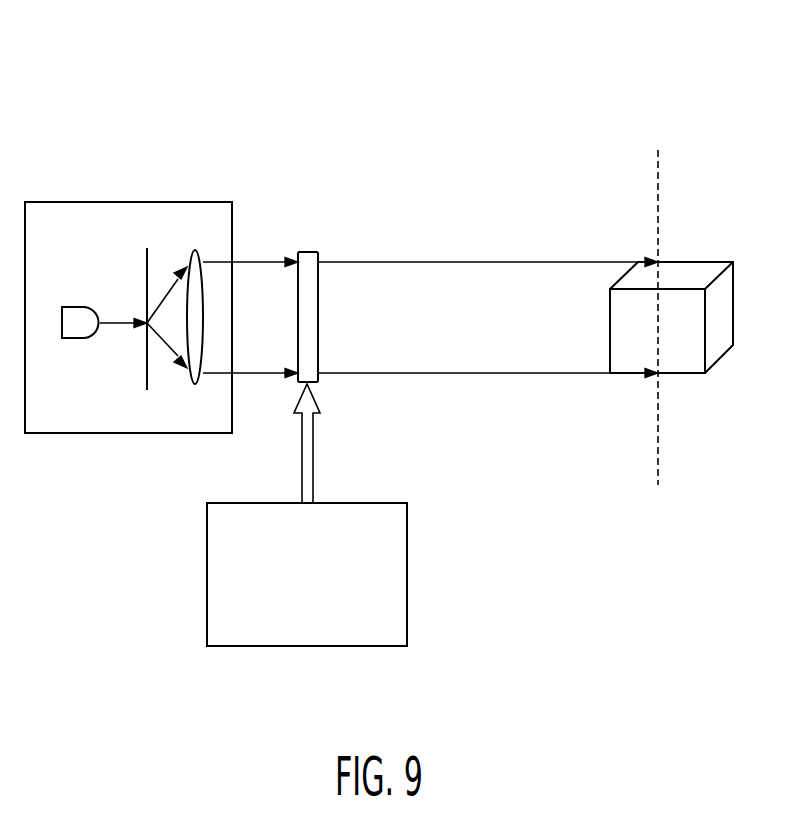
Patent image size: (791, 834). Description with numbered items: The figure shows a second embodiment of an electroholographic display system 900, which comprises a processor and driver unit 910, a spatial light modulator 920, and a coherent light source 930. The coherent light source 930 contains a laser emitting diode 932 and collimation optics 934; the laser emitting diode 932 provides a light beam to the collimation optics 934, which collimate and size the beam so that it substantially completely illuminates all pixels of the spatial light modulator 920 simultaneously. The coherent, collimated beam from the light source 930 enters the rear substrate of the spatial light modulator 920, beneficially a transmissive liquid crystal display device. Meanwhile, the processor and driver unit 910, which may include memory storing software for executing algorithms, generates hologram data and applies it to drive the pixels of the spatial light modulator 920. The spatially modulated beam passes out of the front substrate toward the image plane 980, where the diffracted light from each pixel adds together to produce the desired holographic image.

The electroholographic display system 900 is at (415, 32).
The processor and driver unit 910 is at (407, 590).
The spatial light modulator 920 is at (305, 252).
The coherent light source 930 is at (121, 202).
The laser emitting diode 932 is at (73, 307).
The collimation optics 934 is at (195, 250).
The image plane 980 is at (658, 167).